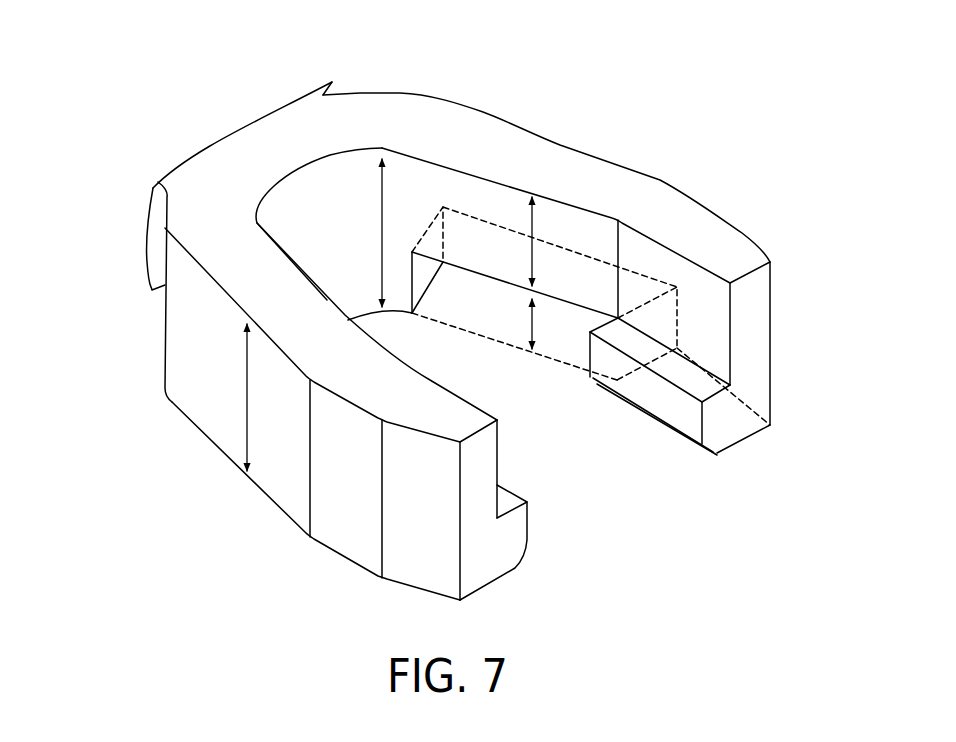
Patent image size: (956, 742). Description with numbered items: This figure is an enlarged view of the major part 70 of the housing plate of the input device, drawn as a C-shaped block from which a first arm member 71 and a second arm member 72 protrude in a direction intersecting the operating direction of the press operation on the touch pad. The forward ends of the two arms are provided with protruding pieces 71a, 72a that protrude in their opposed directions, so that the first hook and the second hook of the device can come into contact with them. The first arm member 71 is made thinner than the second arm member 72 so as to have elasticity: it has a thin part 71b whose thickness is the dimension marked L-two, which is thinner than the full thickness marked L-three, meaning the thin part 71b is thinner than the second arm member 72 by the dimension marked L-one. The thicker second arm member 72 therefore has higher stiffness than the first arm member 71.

The holding member 70 is at (427, 310).
The first arm member 71 is at (677, 210).
The protruding piece 71a is at (678, 403).
The thin part 71b is at (573, 227).
The second arm member 72 is at (260, 286).
The protruding piece 72a is at (517, 523).